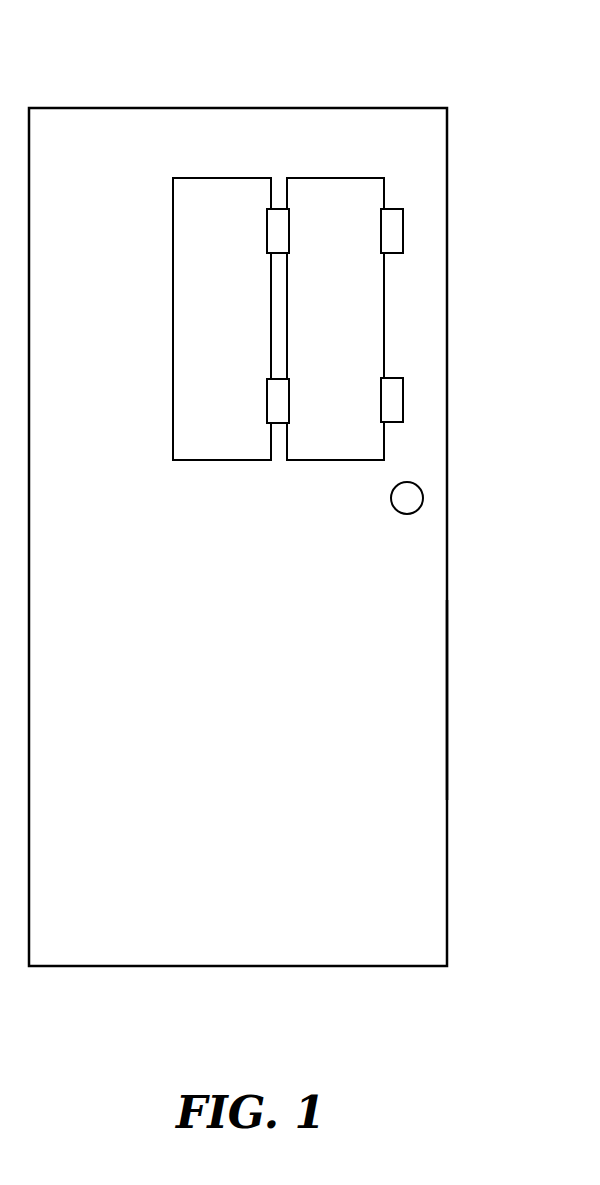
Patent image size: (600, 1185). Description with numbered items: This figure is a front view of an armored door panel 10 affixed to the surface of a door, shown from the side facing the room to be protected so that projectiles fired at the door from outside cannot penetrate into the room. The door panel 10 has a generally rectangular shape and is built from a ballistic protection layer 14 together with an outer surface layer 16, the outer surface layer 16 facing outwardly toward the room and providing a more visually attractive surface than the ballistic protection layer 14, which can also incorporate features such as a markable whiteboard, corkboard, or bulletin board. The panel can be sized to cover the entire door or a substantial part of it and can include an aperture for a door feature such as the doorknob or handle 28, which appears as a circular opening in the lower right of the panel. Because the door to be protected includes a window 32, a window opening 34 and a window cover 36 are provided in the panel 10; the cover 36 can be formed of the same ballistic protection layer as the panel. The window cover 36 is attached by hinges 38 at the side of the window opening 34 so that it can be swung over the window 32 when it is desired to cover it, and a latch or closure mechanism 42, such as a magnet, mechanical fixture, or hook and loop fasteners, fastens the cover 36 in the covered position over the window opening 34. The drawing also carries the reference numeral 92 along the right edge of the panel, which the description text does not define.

The armored door panel 10 is at (186, 62).
The ballistic protection layer 14 is at (387, 620).
The outer surface layer 16 is at (119, 607).
The doorknob or handle 28 is at (412, 500).
The window 32 is at (335, 319).
The window opening 34 is at (385, 452).
The window cover 36 is at (222, 319).
The hinges 38 is at (280, 226).
The latch or closure mechanism 42 is at (394, 225).
The side wall 92 is at (447, 711).